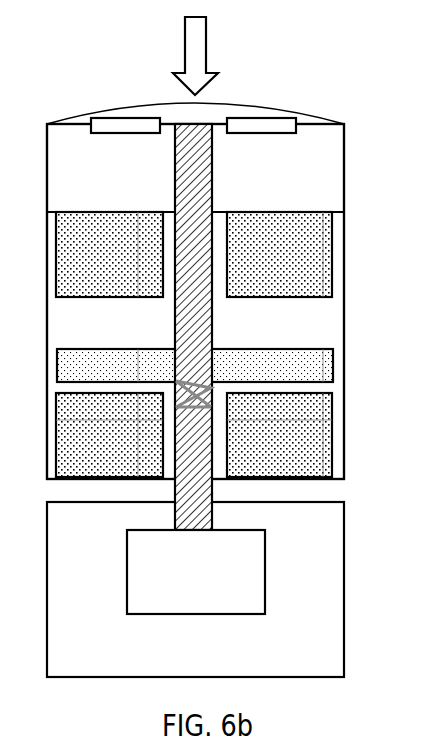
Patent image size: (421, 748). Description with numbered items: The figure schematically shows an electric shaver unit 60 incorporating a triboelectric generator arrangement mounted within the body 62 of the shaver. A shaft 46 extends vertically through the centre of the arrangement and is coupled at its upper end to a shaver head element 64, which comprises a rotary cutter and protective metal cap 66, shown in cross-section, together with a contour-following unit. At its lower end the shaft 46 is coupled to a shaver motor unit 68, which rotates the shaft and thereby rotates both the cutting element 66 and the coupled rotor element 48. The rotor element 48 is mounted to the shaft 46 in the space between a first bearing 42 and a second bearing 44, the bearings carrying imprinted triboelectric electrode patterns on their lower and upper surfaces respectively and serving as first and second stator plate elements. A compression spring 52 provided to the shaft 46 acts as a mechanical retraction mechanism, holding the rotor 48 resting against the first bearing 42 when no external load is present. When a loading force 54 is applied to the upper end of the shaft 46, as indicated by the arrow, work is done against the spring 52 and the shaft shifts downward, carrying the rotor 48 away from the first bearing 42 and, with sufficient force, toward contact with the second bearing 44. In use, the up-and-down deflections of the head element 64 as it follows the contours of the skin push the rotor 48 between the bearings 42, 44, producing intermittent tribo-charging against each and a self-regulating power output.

The shaver unit 60 is at (62, 72).
The loading force 54 is at (210, 33).
The rotary cutter and protective metal cap 66 is at (137, 118).
The shaver head element 64 is at (311, 117).
The shaft 46 is at (215, 172).
The first bearing 42 is at (333, 247).
The body 62 is at (345, 293).
The rotor element 48 is at (333, 365).
The second bearing 44 is at (333, 438).
The compression spring 52 is at (180, 413).
The shaver motor unit 68 is at (266, 572).